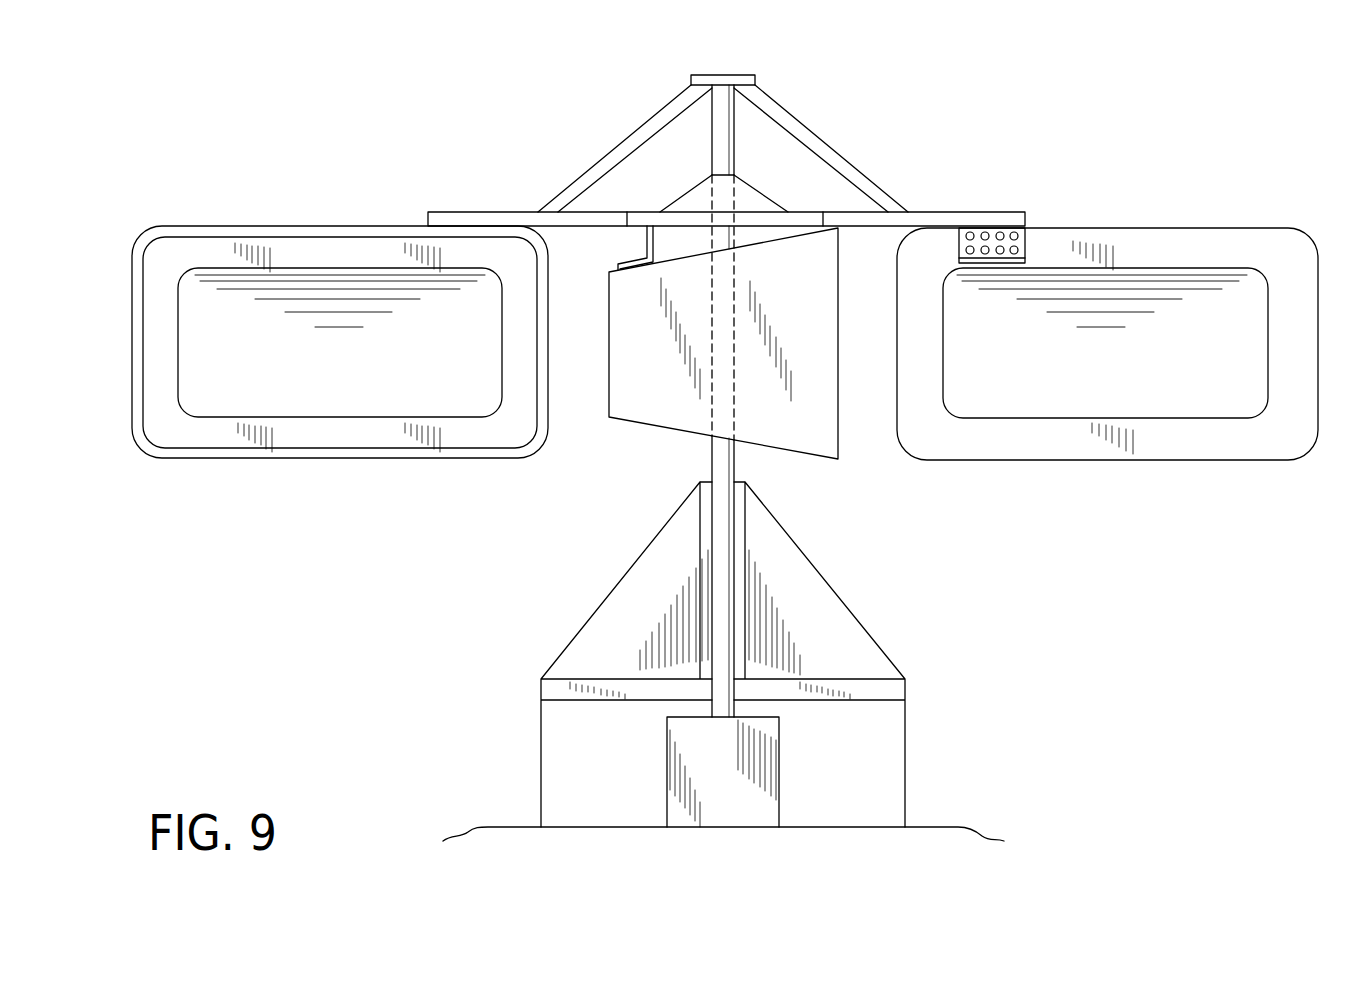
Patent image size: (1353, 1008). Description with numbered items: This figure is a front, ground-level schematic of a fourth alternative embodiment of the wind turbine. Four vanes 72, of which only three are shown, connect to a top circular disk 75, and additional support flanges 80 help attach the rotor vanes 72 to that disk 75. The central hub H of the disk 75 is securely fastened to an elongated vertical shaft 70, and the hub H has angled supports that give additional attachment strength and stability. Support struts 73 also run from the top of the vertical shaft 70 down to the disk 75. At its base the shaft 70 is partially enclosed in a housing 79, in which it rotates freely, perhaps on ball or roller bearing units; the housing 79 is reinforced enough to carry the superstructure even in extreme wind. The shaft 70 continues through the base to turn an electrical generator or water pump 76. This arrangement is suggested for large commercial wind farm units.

The elongated vertical shaft 70 is at (738, 463).
The vanes 72 is at (302, 461).
The support struts 73 is at (640, 127).
The top circular disk 75 is at (455, 212).
The electrical generator or water pump 76 is at (780, 770).
The housing 79 is at (615, 609).
The support flanges 80 is at (647, 248).
The hub H is at (859, 146).